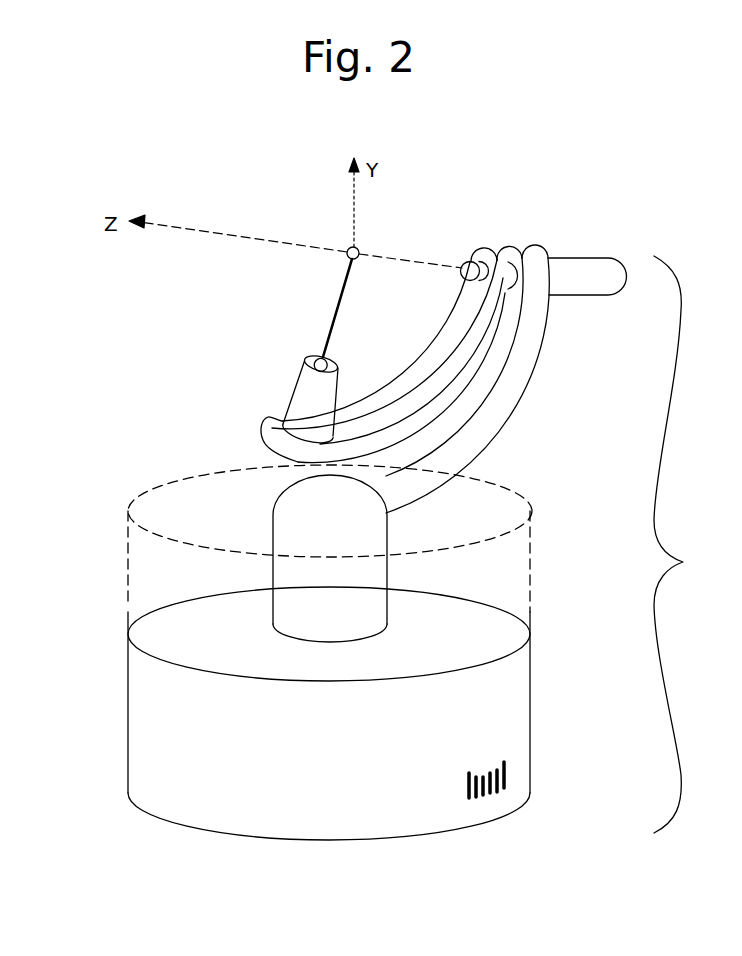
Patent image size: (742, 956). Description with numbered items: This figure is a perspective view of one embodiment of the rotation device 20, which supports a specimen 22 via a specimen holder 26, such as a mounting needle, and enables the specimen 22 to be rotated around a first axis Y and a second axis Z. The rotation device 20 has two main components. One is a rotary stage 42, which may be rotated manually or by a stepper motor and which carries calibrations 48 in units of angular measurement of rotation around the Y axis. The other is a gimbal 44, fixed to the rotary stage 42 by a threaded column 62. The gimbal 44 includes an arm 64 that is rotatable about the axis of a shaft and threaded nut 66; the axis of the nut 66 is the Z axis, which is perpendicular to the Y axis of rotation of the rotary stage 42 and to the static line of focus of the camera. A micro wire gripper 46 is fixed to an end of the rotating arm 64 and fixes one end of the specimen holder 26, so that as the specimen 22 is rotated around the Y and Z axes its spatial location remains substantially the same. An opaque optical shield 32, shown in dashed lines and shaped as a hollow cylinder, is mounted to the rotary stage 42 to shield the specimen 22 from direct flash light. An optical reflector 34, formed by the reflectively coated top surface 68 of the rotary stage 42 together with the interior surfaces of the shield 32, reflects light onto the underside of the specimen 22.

The rotation device 20 is at (685, 562).
The specimen 22 is at (357, 248).
The specimen holder 26 is at (338, 290).
The optical shield 32 is at (127, 593).
The optical reflector 34 is at (195, 511).
The rotary stage 42 is at (200, 782).
The gimbal 44 is at (500, 420).
The micro wire gripper 46 is at (307, 393).
The calibrations 48 is at (503, 815).
The threaded column 62 is at (293, 615).
The arm 64 is at (398, 375).
The threaded nut 66 is at (592, 299).
The top surface 68 is at (344, 657).